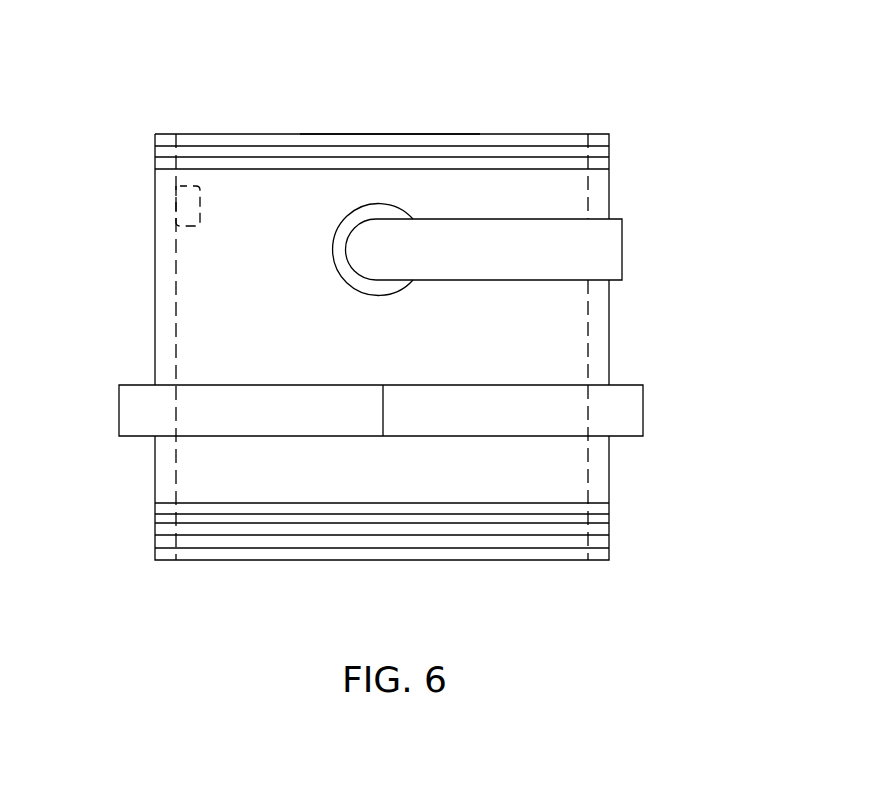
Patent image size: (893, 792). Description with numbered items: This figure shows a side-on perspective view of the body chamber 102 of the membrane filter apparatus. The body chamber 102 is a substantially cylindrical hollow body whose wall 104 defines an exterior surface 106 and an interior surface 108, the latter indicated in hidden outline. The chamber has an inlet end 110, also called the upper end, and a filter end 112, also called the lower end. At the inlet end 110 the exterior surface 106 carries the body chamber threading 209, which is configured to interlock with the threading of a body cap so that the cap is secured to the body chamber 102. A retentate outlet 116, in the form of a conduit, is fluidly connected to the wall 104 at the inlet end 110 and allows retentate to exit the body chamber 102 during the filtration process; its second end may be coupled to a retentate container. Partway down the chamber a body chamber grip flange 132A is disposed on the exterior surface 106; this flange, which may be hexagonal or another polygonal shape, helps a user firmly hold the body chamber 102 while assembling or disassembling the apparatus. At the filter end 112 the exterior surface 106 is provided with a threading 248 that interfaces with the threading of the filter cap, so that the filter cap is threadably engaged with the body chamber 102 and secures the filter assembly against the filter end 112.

The body chamber 102 is at (592, 72).
The wall 104 is at (598, 303).
The exterior surface 106 is at (609, 350).
The interior surface 108 is at (165, 202).
The inlet end 110 is at (609, 152).
The filter end 112 is at (609, 543).
The retentate outlet 116 is at (622, 257).
The body chamber grip flange 132A is at (643, 412).
The body chamber threading 209 is at (389, 134).
The threading 248 is at (525, 548).